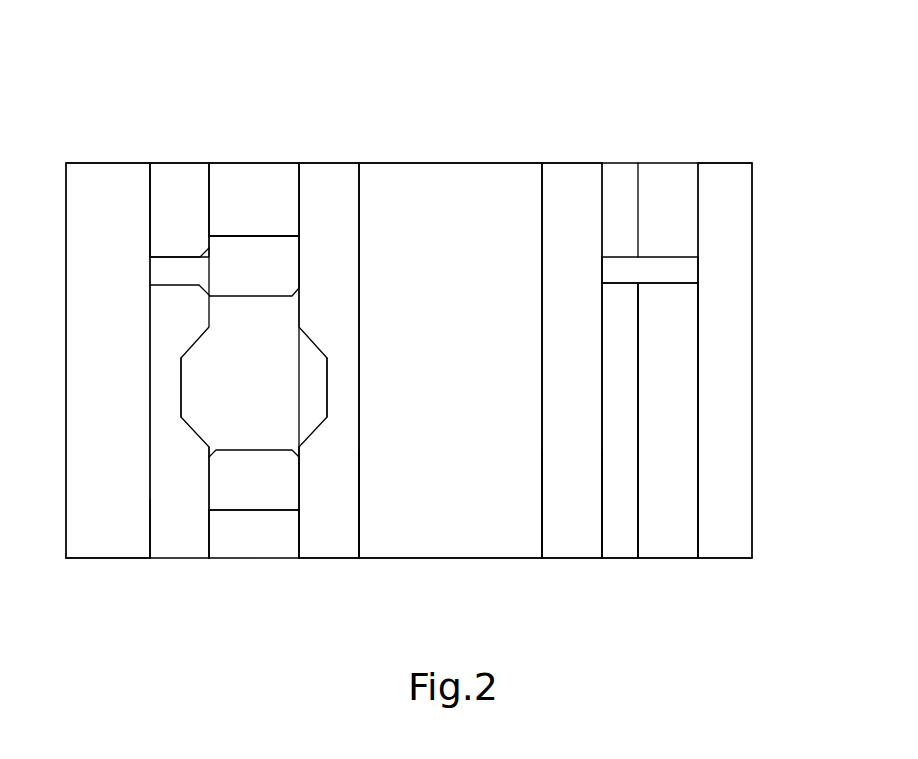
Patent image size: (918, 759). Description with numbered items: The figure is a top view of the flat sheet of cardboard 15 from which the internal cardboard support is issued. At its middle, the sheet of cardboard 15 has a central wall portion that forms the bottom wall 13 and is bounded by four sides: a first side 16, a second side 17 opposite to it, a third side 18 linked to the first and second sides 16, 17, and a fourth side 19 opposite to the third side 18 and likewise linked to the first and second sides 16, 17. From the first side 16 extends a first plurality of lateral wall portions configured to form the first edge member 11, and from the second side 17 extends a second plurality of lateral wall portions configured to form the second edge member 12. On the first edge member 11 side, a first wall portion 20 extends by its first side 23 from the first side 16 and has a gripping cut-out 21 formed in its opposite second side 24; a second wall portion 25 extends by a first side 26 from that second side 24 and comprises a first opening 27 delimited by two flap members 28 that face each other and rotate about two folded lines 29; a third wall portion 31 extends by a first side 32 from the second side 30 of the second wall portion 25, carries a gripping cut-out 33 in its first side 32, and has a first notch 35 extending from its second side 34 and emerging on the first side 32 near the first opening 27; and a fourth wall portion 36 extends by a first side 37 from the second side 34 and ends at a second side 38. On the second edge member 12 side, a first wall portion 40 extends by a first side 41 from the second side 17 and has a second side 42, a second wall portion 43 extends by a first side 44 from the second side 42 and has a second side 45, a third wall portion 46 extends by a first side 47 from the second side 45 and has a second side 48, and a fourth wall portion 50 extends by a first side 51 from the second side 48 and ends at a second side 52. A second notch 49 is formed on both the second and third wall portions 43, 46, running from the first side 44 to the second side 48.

The first edge member 11 is at (158, 98).
The second edge member 12 is at (672, 100).
The bottom wall 13 is at (435, 364).
The sheet of cardboard 15 is at (334, 70).
The first side 16 is at (359, 503).
The second side 17 is at (542, 389).
The third side 18 is at (442, 163).
The fourth side 19 is at (447, 558).
The first wall portion 20 is at (317, 219).
The gripping cut-out 21 is at (327, 379).
The first side 23 is at (359, 257).
The second side 24 is at (299, 520).
The second wall portion 25 is at (240, 209).
The first side 26 is at (299, 533).
The first opening 27 is at (240, 395).
The flap members 28 is at (240, 275).
The folded lines 29 is at (226, 236).
The second side 30 is at (209, 535).
The third wall portion 31 is at (165, 222).
The first side 32 is at (209, 507).
The gripping cut-out 33 is at (183, 398).
The second side 34 is at (150, 512).
The first notch 35 is at (175, 275).
The fourth wall portion 36 is at (92, 394).
The first side 37 is at (150, 424).
The second side 38 is at (66, 275).
The first wall portion 40 is at (557, 317).
The first side 41 is at (542, 505).
The second side 42 is at (602, 348).
The second wall portion 43 is at (611, 472).
The first side 44 is at (602, 510).
The second side 45 is at (638, 357).
The third wall portion 46 is at (654, 397).
The first side 47 is at (638, 510).
The second side 48 is at (698, 507).
The second notch 49 is at (656, 270).
The fourth wall portion 50 is at (712, 287).
The first side 51 is at (698, 383).
The second side 52 is at (752, 418).